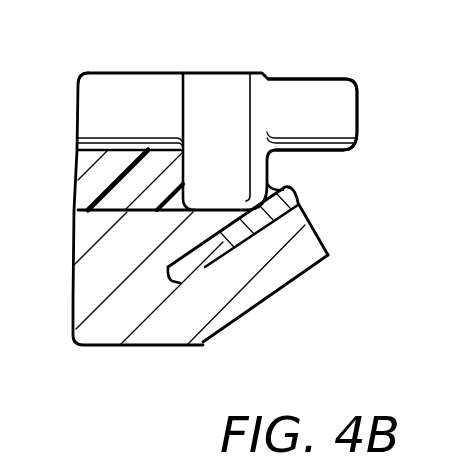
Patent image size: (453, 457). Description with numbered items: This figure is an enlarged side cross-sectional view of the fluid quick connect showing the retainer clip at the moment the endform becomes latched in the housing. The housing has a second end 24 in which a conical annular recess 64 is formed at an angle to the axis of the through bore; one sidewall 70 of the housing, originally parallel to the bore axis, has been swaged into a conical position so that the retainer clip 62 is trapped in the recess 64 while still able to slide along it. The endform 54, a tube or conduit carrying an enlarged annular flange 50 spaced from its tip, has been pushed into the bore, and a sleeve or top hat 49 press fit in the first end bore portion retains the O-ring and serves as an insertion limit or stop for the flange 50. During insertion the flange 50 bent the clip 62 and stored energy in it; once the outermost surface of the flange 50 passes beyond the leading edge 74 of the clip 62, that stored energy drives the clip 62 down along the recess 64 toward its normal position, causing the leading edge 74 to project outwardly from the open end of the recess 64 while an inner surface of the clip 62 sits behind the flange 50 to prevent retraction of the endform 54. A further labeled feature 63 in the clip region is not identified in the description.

The second end 24 is at (318, 238).
The top hat 49 is at (110, 160).
The annular flange 50 is at (246, 100).
The endform 54 is at (322, 98).
The retainer clip 62 is at (237, 250).
The end portion 63 is at (182, 283).
The annular recess 64 is at (187, 271).
The sidewall 70 is at (307, 268).
The leading edge 74 is at (291, 186).